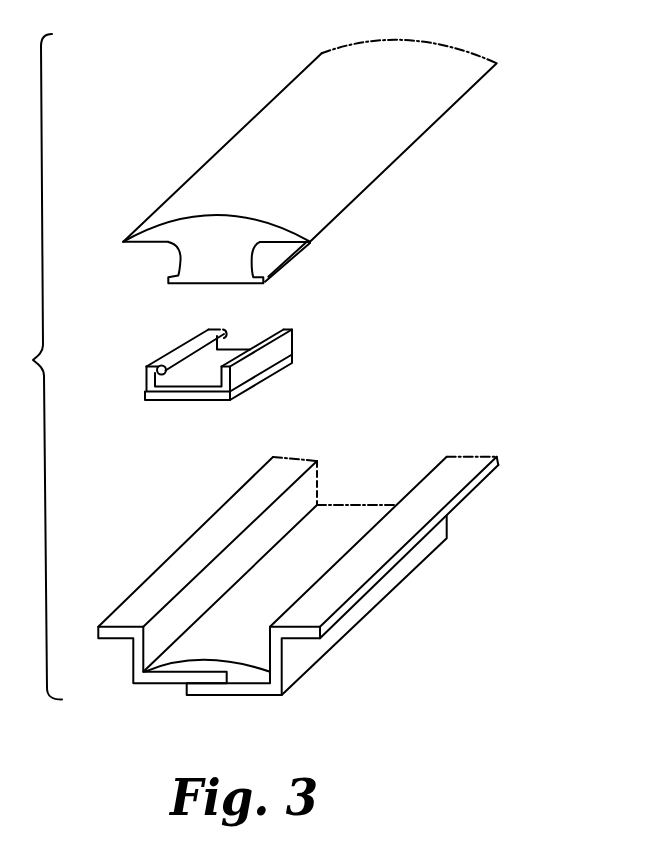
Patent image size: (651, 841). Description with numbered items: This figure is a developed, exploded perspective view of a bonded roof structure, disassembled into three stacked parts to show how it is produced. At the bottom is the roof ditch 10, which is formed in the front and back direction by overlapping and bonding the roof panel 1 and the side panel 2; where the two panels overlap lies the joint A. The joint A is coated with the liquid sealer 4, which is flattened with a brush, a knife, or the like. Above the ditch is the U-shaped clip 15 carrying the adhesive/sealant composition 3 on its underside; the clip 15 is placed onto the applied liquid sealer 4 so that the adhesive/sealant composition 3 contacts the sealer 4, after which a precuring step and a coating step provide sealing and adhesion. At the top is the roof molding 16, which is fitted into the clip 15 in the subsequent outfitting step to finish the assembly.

The roof molding 16 is at (425, 120).
The clip 15 is at (289, 347).
The adhesive/sealant composition 3 is at (158, 401).
The roof ditch 10 is at (334, 609).
The roof panel 1 is at (133, 653).
The side panel 2 is at (275, 665).
The liquid sealer 4 is at (252, 675).
The joint A is at (226, 704).